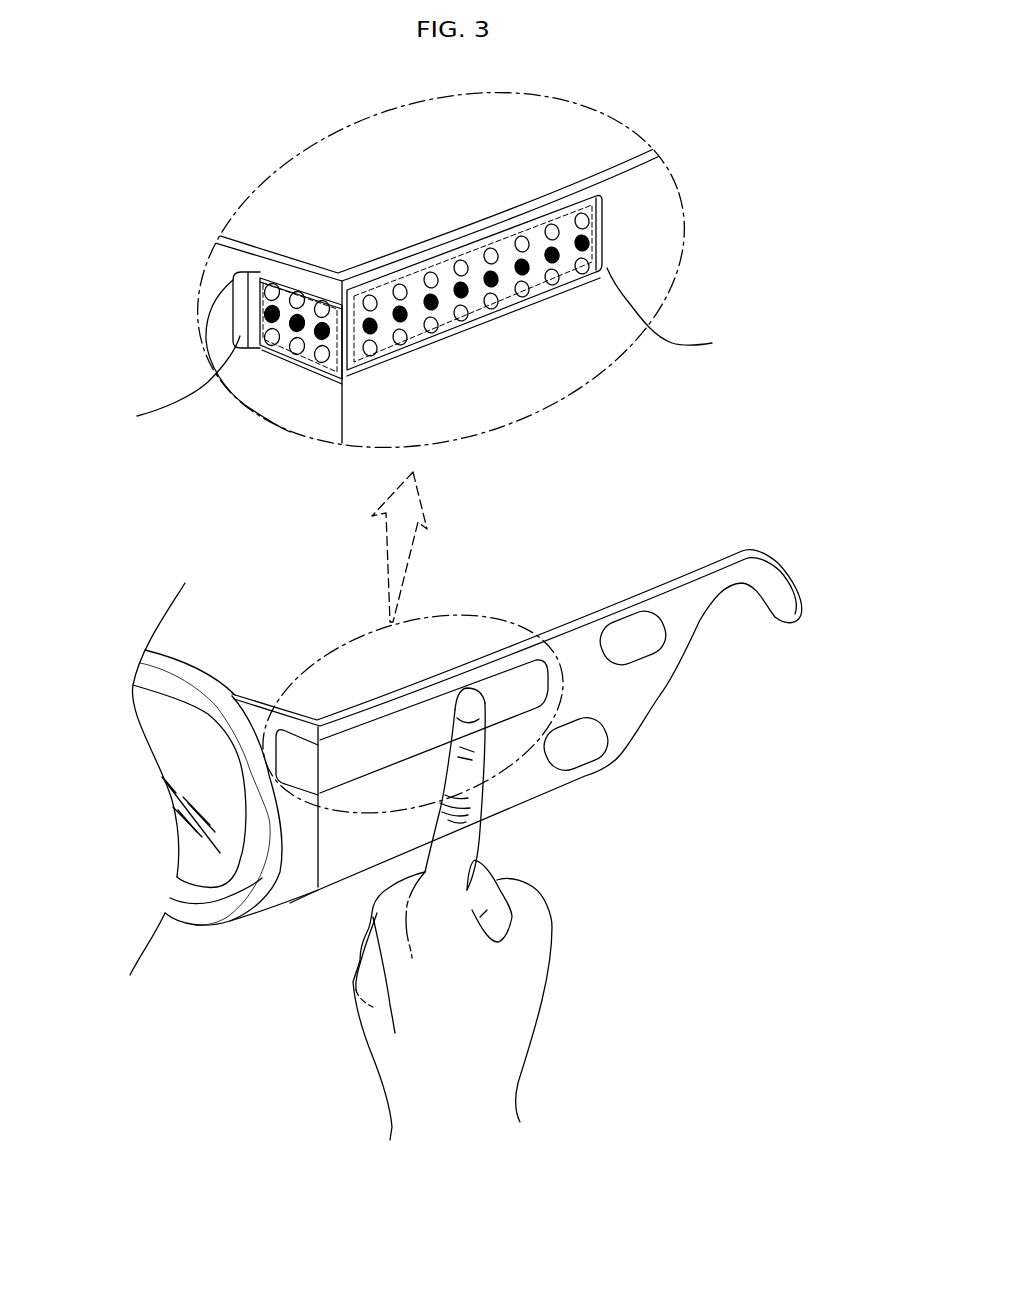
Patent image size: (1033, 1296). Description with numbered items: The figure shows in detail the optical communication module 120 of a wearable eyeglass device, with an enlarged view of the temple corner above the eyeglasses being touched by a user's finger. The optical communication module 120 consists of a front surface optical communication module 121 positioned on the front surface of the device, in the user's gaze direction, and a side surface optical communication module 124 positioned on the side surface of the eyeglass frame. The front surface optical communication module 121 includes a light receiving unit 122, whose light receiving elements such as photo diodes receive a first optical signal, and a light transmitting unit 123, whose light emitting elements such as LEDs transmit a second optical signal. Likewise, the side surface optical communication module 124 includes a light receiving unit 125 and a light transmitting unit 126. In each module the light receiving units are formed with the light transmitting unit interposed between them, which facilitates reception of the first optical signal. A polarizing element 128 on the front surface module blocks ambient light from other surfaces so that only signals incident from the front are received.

The optical communication module 120 is at (590, 182).
The front surface optical communication module 121 is at (322, 372).
The light receiving unit 122 is at (264, 340).
The light transmitting unit 123 is at (266, 291).
The side surface optical communication module 124 is at (453, 340).
The light receiving unit 125 is at (593, 214).
The light transmitting unit 126 is at (595, 241).
The polarizing element 128 is at (238, 280).